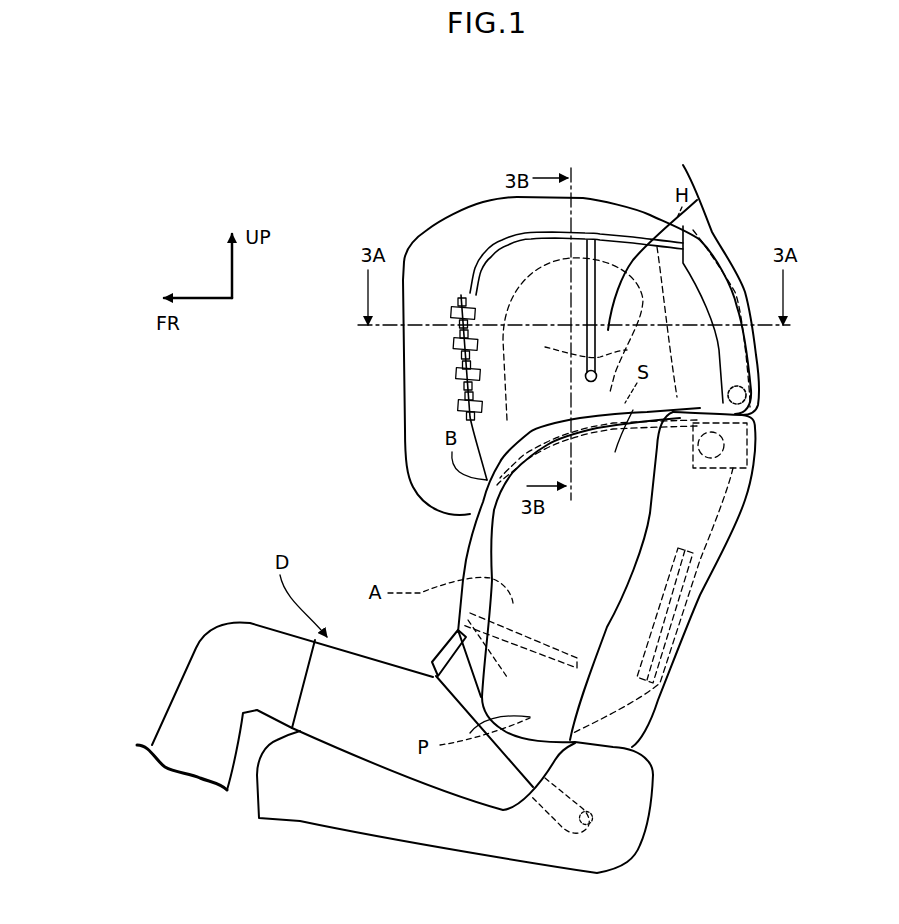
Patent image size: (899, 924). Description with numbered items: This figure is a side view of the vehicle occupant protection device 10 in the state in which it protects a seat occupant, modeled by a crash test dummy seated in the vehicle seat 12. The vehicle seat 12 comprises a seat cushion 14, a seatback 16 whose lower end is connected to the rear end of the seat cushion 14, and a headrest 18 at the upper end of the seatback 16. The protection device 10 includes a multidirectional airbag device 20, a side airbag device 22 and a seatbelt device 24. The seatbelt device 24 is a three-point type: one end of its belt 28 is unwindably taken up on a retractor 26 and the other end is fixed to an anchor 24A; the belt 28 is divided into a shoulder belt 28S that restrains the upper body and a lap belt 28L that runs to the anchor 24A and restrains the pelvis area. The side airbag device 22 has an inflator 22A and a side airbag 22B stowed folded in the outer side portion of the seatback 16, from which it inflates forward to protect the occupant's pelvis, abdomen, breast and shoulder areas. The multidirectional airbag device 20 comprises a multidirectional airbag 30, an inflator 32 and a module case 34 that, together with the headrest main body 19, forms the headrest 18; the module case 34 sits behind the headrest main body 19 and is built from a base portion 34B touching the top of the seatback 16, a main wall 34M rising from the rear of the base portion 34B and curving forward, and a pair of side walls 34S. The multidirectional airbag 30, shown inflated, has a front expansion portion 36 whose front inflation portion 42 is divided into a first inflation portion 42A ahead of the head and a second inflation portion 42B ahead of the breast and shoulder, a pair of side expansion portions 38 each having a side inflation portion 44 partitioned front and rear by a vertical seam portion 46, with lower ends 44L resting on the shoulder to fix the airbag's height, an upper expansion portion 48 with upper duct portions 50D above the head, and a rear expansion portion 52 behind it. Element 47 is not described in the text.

The vehicle occupant protection device 10 is at (335, 481).
The vehicle seat 12 is at (680, 711).
The seat cushion 14 is at (280, 803).
The seatback 16 is at (718, 530).
The headrest 18 is at (758, 160).
The headrest main body 19 is at (728, 275).
The multidirectional airbag device 20 is at (708, 162).
The side airbag device 22 is at (492, 557).
The inflator 22A is at (658, 630).
The side airbag 22B is at (470, 530).
The seatbelt device 24 is at (436, 641).
The anchor 24A is at (592, 815).
The retractor 26 is at (740, 458).
The belt 28 is at (468, 520).
The shoulder belt 28S is at (593, 427).
The lap belt 28L is at (465, 684).
The multidirectional airbag 30 is at (360, 127).
The inflator 32 is at (746, 395).
The module case 34 is at (724, 262).
The side walls 34S is at (761, 333).
The main wall 34M is at (757, 355).
The base portion 34B is at (733, 413).
The front expansion portion 36 is at (428, 292).
The side expansion portions 38 is at (503, 270).
The front inflation portion 42 is at (293, 370).
The first inflation portion 42A is at (408, 360).
The second inflation portion 42B is at (413, 473).
The side inflation portion 44 is at (458, 328).
The lower ends 44L is at (508, 403).
The seam portion 46 is at (587, 297).
The fastener 47 is at (464, 292).
The upper expansion portion 48 is at (593, 218).
The upper duct portions 50D is at (618, 212).
The rear expansion portion 52 is at (683, 163).